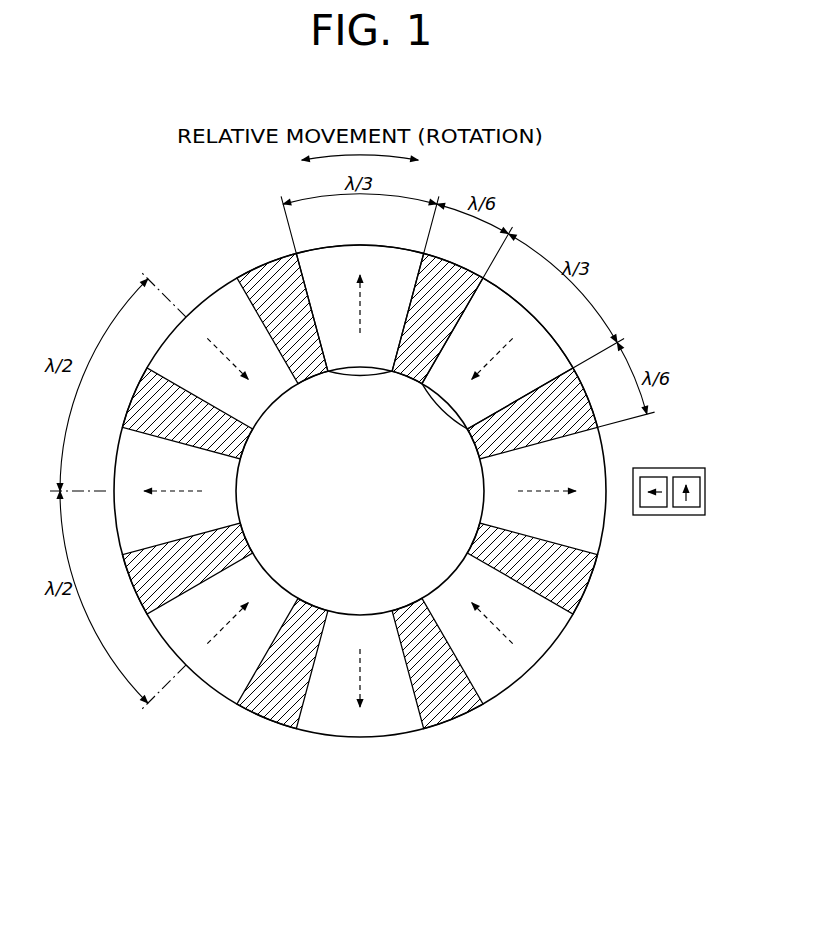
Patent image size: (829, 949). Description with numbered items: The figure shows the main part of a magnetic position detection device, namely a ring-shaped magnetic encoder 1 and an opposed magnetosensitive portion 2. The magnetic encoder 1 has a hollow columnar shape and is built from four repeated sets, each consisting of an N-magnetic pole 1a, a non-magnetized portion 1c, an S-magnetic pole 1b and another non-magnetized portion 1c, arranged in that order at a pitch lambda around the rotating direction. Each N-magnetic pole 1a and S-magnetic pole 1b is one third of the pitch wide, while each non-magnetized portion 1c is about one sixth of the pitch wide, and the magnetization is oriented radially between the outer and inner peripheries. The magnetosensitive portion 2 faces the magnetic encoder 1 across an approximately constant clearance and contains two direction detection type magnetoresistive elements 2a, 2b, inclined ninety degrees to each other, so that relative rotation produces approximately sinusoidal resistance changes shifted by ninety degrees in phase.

The magnetic encoder 1 is at (332, 747).
The N-magnetic pole 1a is at (342, 245).
The S-magnetic pole 1b is at (518, 295).
The non-magnetized portion 1c is at (438, 248).
The magnetosensitive portion 2 is at (706, 476).
The magnetoresistive element 2a is at (652, 507).
The magnetoresistive element 2b is at (690, 507).